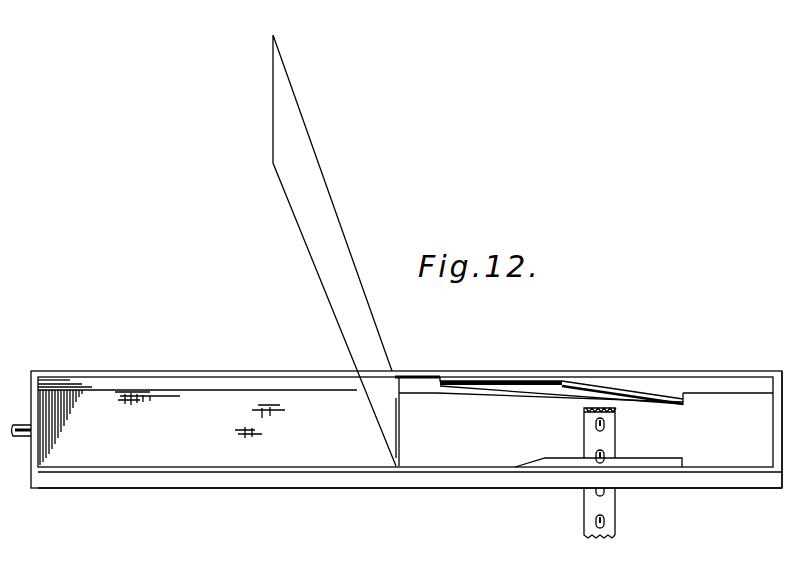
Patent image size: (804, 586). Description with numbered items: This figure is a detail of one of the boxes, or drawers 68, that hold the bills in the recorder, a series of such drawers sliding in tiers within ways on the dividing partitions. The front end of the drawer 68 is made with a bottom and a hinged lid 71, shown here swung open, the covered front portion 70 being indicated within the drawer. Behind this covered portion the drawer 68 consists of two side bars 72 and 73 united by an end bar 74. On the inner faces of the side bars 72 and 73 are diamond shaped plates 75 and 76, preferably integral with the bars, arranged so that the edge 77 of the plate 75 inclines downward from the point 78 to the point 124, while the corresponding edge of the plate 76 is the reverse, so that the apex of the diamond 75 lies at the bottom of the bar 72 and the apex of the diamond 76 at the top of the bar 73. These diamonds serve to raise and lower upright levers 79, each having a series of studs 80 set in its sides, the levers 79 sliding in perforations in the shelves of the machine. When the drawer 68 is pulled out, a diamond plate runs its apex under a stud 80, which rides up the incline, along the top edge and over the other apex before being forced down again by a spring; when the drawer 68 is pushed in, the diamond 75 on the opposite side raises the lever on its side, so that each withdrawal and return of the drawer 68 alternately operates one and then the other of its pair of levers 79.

The drawer 68 is at (397, 441).
The lining 70 is at (197, 422).
The hinged lid 71 is at (336, 250).
The side bar 72 is at (728, 388).
The side bar 73 is at (410, 482).
The end bar 74 is at (792, 429).
The diamond shaped plate 75 is at (540, 400).
The diamond shaped plate 76 is at (545, 460).
The edge of plate 77 is at (600, 386).
The point 78 is at (563, 380).
The upright lever 79 is at (600, 483).
The stud 80 is at (606, 457).
The point 124 is at (692, 406).